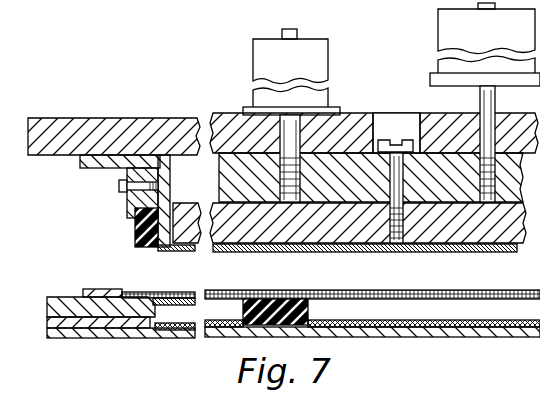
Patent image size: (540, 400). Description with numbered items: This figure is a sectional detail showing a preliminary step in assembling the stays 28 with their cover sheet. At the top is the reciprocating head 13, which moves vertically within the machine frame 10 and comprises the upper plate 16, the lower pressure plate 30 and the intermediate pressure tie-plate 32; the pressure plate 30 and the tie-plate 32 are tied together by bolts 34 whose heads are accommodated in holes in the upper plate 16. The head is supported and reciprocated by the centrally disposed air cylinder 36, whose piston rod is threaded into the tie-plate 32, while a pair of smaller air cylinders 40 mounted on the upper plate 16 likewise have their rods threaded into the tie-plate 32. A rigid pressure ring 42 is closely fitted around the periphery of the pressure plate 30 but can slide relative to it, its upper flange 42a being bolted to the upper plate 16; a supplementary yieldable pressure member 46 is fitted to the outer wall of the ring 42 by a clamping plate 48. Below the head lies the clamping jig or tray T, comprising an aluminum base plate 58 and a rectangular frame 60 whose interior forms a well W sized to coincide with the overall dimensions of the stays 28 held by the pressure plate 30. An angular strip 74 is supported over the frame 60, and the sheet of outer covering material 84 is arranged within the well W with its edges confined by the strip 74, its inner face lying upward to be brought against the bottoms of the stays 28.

The frame 10 is at (148, 294).
The reciprocating head 13 is at (390, 285).
The upper plate 16 is at (80, 123).
The stays 28 is at (294, 252).
The pressure plate 30 is at (283, 233).
The pressure tie-plate 32 is at (221, 169).
The bolts 34 is at (405, 140).
The air cylinder 36 is at (496, 44).
The air cylinders 40 is at (301, 74).
The pressure ring 42 is at (168, 203).
The upper flange 42a is at (80, 165).
The yieldable pressure member 46 is at (135, 235).
The clamping plate 48 is at (127, 204).
The base plate 58 is at (137, 333).
The rectangular frame 60 is at (73, 323).
The angular strip 74 is at (83, 291).
The outer covering material sheet 84 is at (194, 291).
The clamping jig or tray T is at (36, 320).
The well W is at (178, 326).